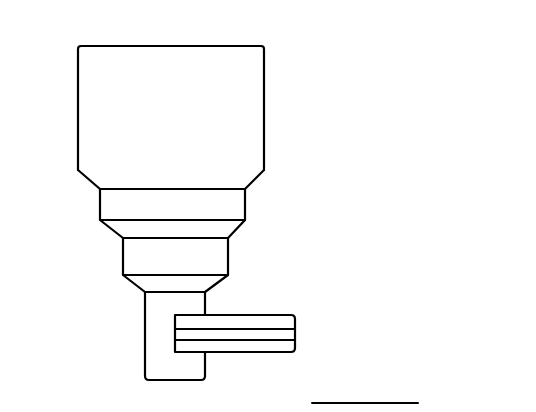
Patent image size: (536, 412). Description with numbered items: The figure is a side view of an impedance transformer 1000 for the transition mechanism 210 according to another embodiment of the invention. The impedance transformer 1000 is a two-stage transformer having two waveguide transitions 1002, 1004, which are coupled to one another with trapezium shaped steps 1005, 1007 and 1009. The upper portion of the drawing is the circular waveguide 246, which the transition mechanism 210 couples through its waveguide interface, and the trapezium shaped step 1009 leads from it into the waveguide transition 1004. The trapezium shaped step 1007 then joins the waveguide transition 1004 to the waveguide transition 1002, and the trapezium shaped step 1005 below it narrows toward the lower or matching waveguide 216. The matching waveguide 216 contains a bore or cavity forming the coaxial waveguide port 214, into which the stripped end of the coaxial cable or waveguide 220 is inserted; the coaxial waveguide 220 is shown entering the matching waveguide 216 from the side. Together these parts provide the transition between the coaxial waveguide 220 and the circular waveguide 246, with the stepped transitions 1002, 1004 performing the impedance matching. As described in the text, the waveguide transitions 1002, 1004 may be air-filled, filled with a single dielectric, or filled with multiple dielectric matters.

The transition mechanism 210 is at (243, 36).
The circular waveguide 246 is at (264, 113).
The trapezium shaped step 1009 is at (267, 180).
The impedance transformer 1000 is at (277, 210).
The waveguide transition 1004 is at (100, 208).
The trapezium shaped step 1007 is at (245, 225).
The waveguide transition 1002 is at (122, 258).
The trapezium shaped step 1005 is at (228, 283).
The matching waveguide 216 is at (145, 340).
The coaxial waveguide 220 is at (283, 314).
The coaxial waveguide port 214 is at (188, 353).